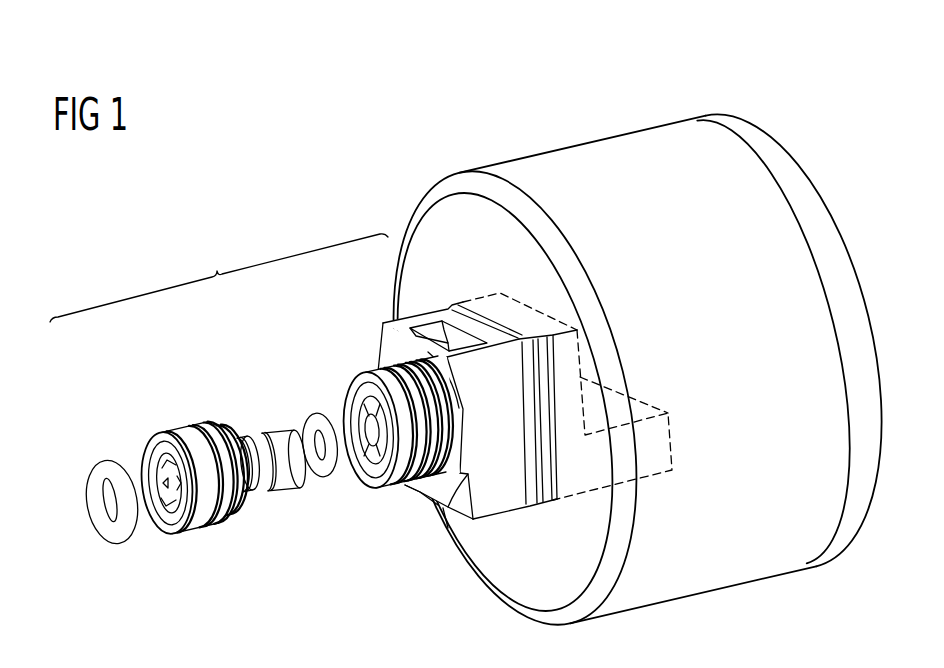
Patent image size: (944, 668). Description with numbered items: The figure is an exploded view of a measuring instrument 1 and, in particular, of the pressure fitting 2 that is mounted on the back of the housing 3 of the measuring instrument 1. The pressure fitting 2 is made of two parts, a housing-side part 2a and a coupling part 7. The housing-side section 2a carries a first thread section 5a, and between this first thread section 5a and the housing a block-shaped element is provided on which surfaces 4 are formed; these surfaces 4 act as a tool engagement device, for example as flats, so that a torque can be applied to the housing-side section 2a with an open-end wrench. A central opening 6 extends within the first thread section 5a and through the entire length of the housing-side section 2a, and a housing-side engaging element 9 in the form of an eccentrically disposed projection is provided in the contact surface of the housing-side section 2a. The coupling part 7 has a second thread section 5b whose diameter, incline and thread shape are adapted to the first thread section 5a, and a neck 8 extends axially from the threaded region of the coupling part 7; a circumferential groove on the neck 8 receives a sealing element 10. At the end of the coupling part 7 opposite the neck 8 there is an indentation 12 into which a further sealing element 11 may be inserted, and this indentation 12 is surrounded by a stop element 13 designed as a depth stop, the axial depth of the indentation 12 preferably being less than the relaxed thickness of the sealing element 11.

The measuring instrument 1 is at (738, 565).
The pressure fitting 2 is at (219, 278).
The housing-side part 2a is at (431, 503).
The housing 3 is at (472, 283).
The surfaces 4 is at (507, 365).
The first thread section 5a is at (383, 350).
The second thread section 5b is at (246, 493).
The central opening 6 is at (354, 396).
The coupling part 7 is at (184, 401).
The neck 8 is at (272, 432).
The housing-side engaging element 9 is at (364, 479).
The sealing element 10 is at (308, 424).
The sealing element 11 is at (105, 539).
The indentation 12 is at (152, 446).
The stop element 13 is at (163, 548).